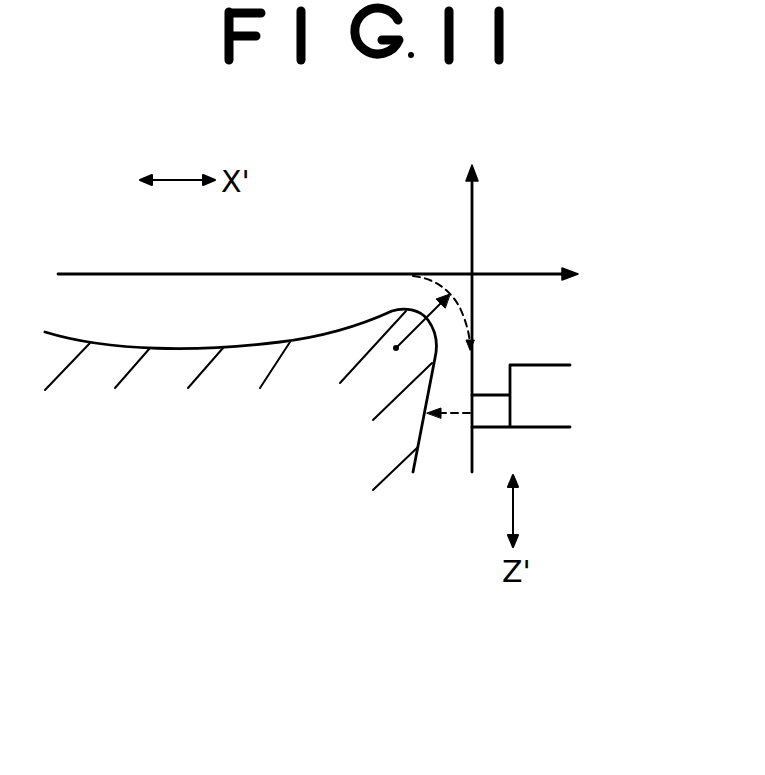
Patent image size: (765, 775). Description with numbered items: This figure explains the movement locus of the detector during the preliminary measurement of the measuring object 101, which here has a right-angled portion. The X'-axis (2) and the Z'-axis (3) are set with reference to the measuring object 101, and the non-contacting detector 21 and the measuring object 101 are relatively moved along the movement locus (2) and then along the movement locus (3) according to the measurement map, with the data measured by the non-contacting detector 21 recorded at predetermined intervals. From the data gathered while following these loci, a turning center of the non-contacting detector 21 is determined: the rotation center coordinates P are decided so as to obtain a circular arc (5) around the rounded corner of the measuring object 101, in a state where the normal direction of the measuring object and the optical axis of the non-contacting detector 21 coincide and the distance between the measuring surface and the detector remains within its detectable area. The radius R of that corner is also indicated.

The X'-axis movement locus 2 is at (173, 274).
The Z'-axis movement locus 3 is at (472, 205).
The circular arc 5 is at (456, 301).
The non-contacting detector 21 is at (553, 428).
The measuring object 101 is at (187, 398).
The tip radius R is at (427, 318).
The rotation center coordinates P is at (410, 341).